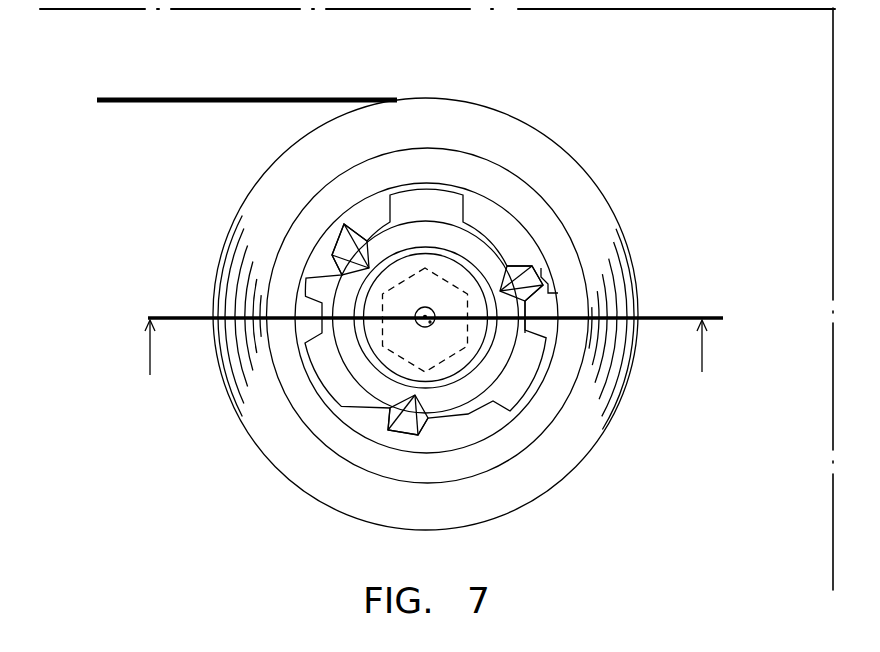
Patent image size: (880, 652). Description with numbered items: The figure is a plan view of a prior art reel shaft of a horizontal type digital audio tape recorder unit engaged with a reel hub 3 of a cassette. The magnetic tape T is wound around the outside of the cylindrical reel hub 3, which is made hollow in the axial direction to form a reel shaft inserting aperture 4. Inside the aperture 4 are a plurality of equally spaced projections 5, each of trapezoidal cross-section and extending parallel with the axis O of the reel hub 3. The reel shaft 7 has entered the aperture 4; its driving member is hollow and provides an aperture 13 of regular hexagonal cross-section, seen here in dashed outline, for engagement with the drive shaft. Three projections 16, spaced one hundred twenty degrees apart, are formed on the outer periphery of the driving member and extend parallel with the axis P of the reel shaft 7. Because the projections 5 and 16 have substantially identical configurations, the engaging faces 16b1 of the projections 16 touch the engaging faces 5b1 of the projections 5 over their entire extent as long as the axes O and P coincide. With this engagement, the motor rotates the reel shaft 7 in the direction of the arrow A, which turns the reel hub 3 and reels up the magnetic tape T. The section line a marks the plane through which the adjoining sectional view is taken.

The magnetic tape T is at (205, 100).
The reel hub 3 is at (393, 172).
The reel shaft inserting aperture 4 is at (430, 188).
The reel shaft 7 is at (500, 238).
The aperture 13 is at (376, 302).
The projection 16 is at (530, 277).
The engaging face 5b1 is at (545, 283).
The projection 5 is at (558, 309).
The engaging face 16b1 is at (548, 305).
The axis of the reel hub O is at (425, 318).
The axis of the reel shaft P is at (425, 320).
The arrow A is at (437, 330).
The section line a- a is at (433, 364).